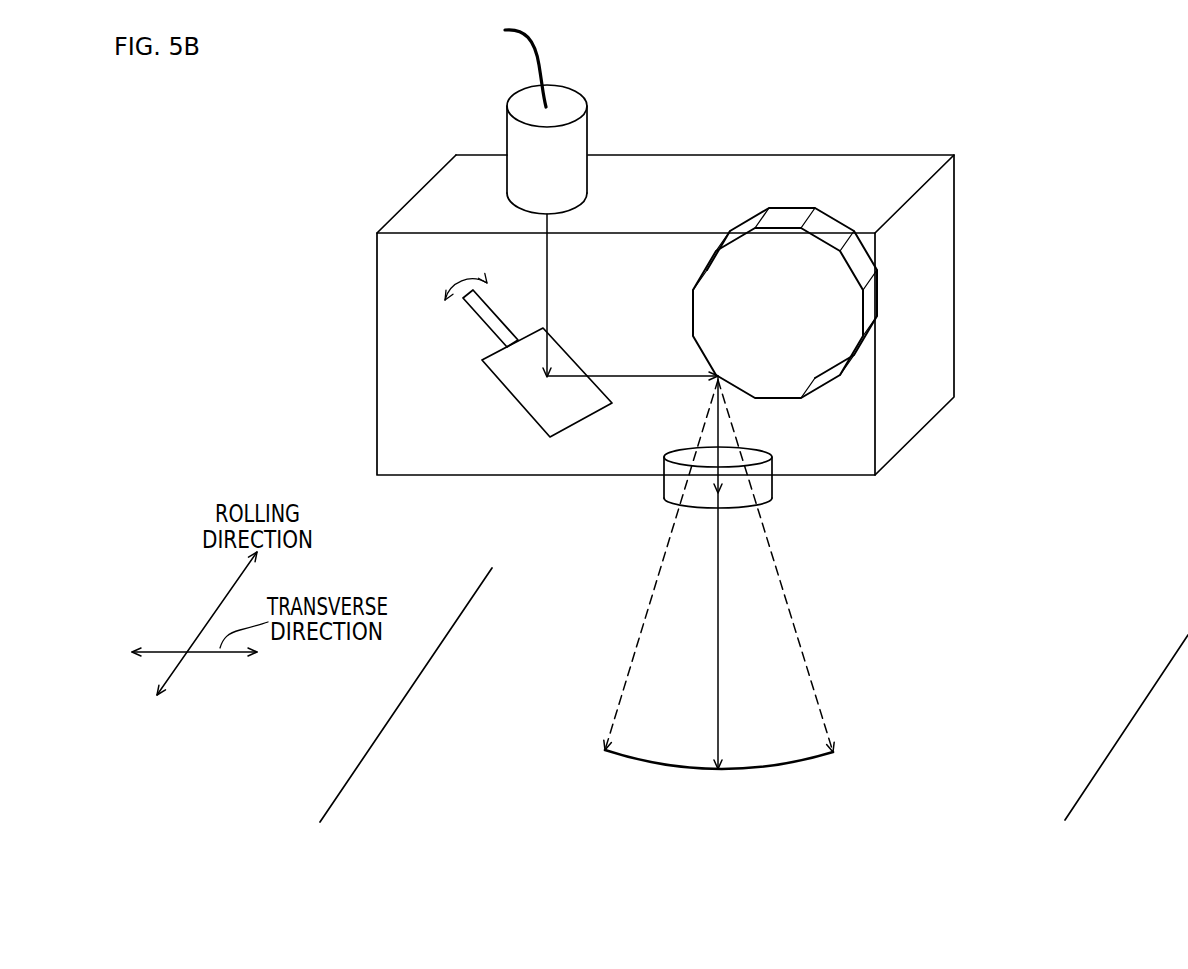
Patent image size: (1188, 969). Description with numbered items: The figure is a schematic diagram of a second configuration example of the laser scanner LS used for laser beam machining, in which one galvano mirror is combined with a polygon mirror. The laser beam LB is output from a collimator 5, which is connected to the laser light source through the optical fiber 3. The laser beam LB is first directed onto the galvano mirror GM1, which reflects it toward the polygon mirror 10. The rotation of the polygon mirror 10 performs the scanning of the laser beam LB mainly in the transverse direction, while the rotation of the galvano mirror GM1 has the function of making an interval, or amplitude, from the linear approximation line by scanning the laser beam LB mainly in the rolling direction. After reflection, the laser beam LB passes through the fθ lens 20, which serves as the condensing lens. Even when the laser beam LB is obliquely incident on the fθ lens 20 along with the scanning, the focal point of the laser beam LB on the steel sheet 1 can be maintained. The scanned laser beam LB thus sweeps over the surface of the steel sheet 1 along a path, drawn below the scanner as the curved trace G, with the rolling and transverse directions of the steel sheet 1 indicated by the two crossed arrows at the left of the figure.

The steel sheet 1 is at (407, 732).
The optical fiber 3 is at (540, 58).
The collimator 5 is at (588, 125).
The polygon mirror 10 is at (789, 210).
The fθ lens 20 is at (773, 485).
The laser scanner LS is at (414, 198).
The galvano mirror GM1 is at (520, 403).
The laser beam LB is at (647, 377).
The scan line G is at (785, 765).